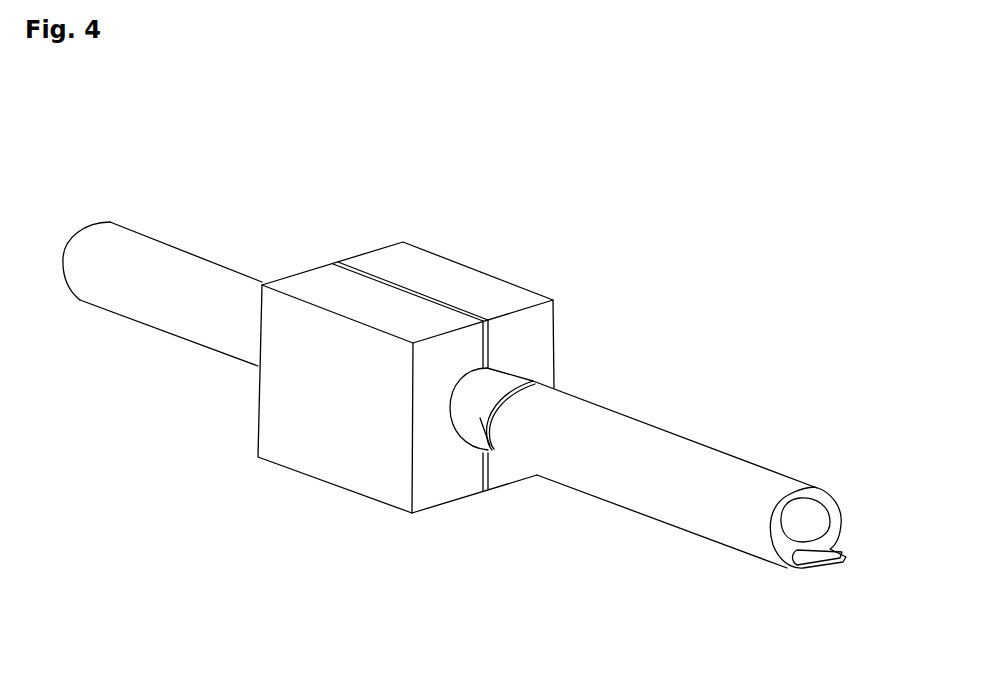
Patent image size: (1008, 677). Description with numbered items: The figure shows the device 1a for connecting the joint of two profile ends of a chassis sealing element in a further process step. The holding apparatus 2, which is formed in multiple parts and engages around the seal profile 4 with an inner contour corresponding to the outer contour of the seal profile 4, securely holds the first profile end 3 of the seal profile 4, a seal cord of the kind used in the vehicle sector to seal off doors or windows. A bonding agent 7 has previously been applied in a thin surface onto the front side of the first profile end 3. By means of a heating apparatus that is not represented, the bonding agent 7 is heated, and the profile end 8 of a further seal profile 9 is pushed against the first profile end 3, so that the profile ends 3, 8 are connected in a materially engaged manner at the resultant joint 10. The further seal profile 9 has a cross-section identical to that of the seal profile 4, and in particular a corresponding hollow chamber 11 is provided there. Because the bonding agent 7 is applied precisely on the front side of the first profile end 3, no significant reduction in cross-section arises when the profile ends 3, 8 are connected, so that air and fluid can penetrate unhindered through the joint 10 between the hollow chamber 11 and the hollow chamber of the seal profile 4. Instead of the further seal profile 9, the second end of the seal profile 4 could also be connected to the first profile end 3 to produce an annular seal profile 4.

The device 1a is at (745, 185).
The holding apparatus 2 is at (507, 293).
The first profile end 3 is at (522, 377).
The seal profile 4 is at (141, 255).
The bonding agent 7 is at (543, 370).
The profile end 8 is at (492, 450).
The further seal profile 9 is at (698, 507).
The joint 10 is at (493, 468).
The hollow chamber 11 is at (810, 505).